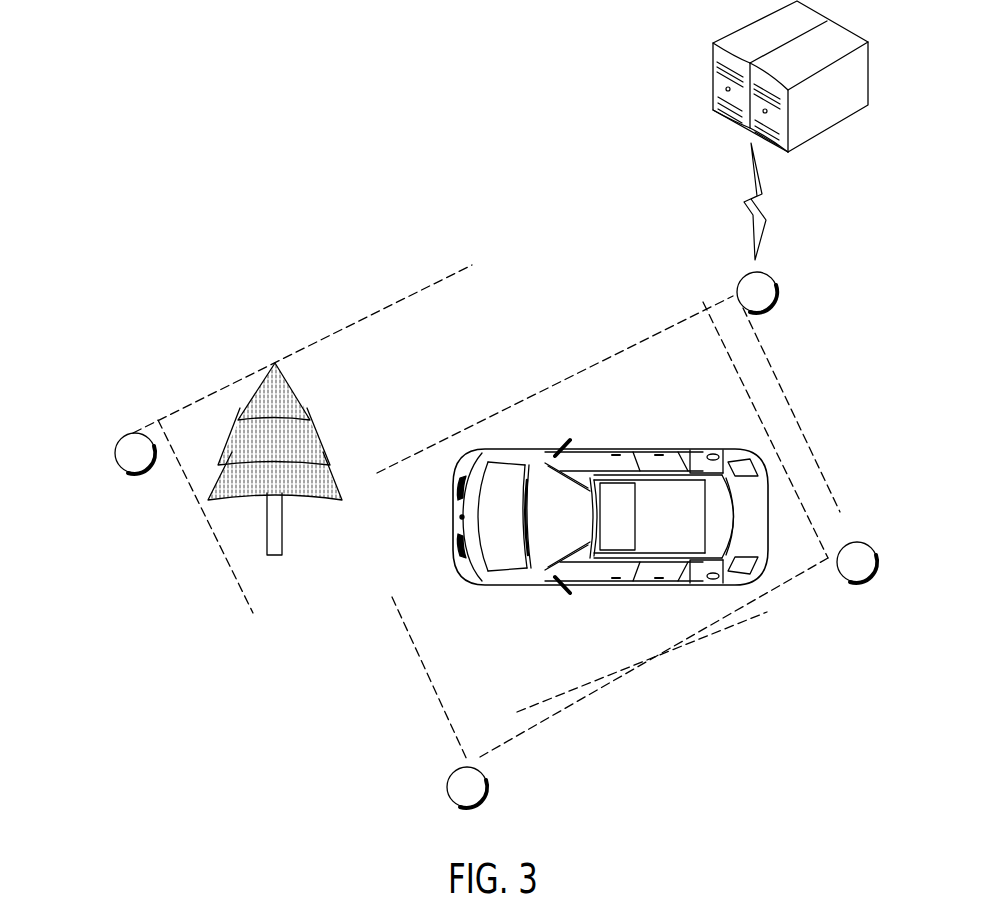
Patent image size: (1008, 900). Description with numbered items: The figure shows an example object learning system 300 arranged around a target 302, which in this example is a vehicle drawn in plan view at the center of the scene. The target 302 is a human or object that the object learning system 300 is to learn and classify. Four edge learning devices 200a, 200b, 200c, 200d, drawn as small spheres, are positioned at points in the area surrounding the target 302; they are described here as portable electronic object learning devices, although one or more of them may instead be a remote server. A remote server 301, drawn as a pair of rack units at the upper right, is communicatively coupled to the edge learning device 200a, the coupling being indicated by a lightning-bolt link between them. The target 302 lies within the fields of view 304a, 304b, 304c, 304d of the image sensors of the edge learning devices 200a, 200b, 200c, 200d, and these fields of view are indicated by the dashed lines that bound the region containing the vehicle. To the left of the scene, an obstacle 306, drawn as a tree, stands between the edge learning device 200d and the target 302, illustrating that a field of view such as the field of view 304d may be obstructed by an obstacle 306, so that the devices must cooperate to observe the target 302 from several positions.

The object learning system 300 is at (222, 120).
The remote server 301 is at (713, 76).
The target 302 is at (452, 520).
The field of view 304a is at (543, 388).
The field of view 304b is at (743, 383).
The field of view 304c is at (612, 692).
The field of view 304d is at (207, 520).
The obstacle 306 is at (312, 442).
The edge learning device 200a is at (736, 294).
The edge learning device 200b is at (860, 584).
The edge learning device 200c is at (447, 788).
The edge learning device 200d is at (115, 456).